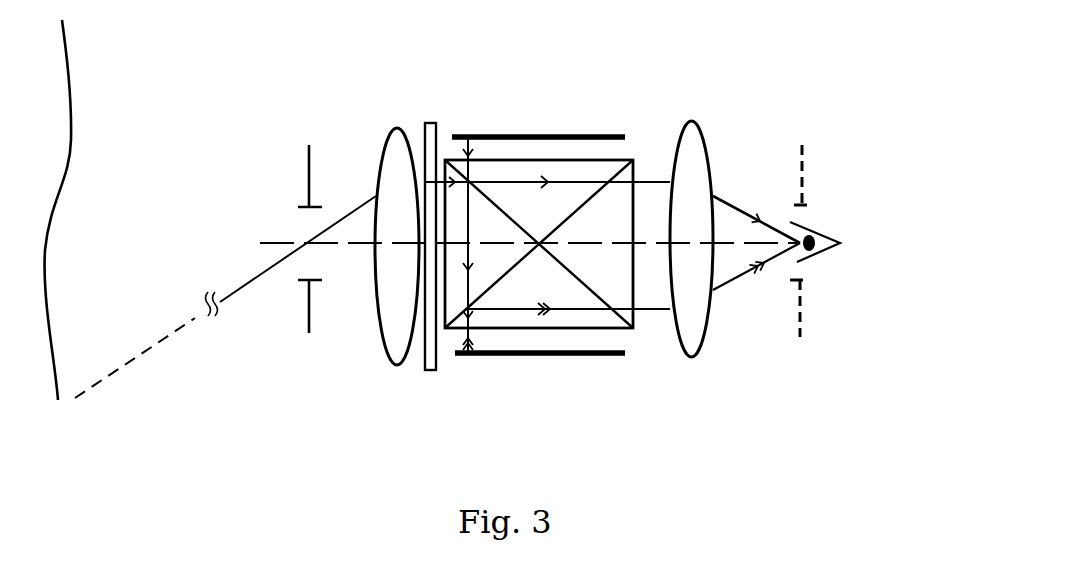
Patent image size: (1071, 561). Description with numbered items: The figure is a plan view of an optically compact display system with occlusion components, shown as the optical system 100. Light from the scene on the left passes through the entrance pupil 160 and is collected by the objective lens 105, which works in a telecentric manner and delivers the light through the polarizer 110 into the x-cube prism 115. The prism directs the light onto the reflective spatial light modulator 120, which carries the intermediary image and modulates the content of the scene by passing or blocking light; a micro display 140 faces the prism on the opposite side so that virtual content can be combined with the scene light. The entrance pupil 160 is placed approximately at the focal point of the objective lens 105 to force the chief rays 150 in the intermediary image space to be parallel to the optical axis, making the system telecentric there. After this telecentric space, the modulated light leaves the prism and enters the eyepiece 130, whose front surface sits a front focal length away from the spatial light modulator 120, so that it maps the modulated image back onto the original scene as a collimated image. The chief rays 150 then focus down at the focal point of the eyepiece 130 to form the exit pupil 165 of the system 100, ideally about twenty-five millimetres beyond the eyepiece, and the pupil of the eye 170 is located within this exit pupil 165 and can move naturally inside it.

The optical system 100 is at (780, 68).
The objective lens 105 is at (392, 129).
The polarizer 110 is at (427, 372).
The x-cube prism 115 is at (633, 328).
The spatial light modulator 120 is at (541, 356).
The eyepiece 130 is at (710, 110).
The micro display 140 is at (544, 134).
The chief rays 150 is at (252, 279).
The entrance pupil 160 is at (306, 335).
The exit pupil 165 is at (800, 337).
The eye 170 is at (826, 231).